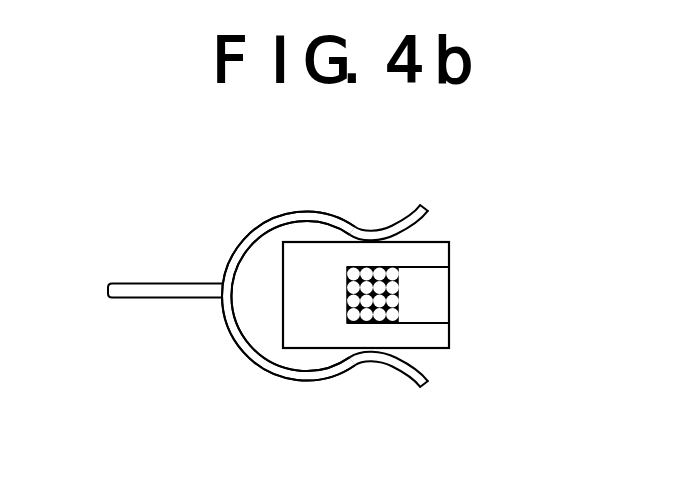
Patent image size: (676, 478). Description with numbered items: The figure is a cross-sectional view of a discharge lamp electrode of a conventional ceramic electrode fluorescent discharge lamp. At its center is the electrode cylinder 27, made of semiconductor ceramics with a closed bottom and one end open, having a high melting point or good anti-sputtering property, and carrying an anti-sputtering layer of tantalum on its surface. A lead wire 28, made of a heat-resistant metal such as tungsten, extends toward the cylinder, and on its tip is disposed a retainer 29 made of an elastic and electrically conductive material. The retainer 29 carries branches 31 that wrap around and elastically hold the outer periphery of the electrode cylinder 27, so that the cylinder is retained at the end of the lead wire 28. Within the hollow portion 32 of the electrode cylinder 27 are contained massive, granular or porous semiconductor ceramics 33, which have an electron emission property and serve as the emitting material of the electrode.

The electrode cylinder 27 is at (404, 257).
The lead wire 28 is at (147, 299).
The retainer 29 is at (325, 212).
The branches 31 is at (233, 254).
The hollow portion 32 is at (427, 298).
The semiconductor ceramics 33 is at (366, 326).